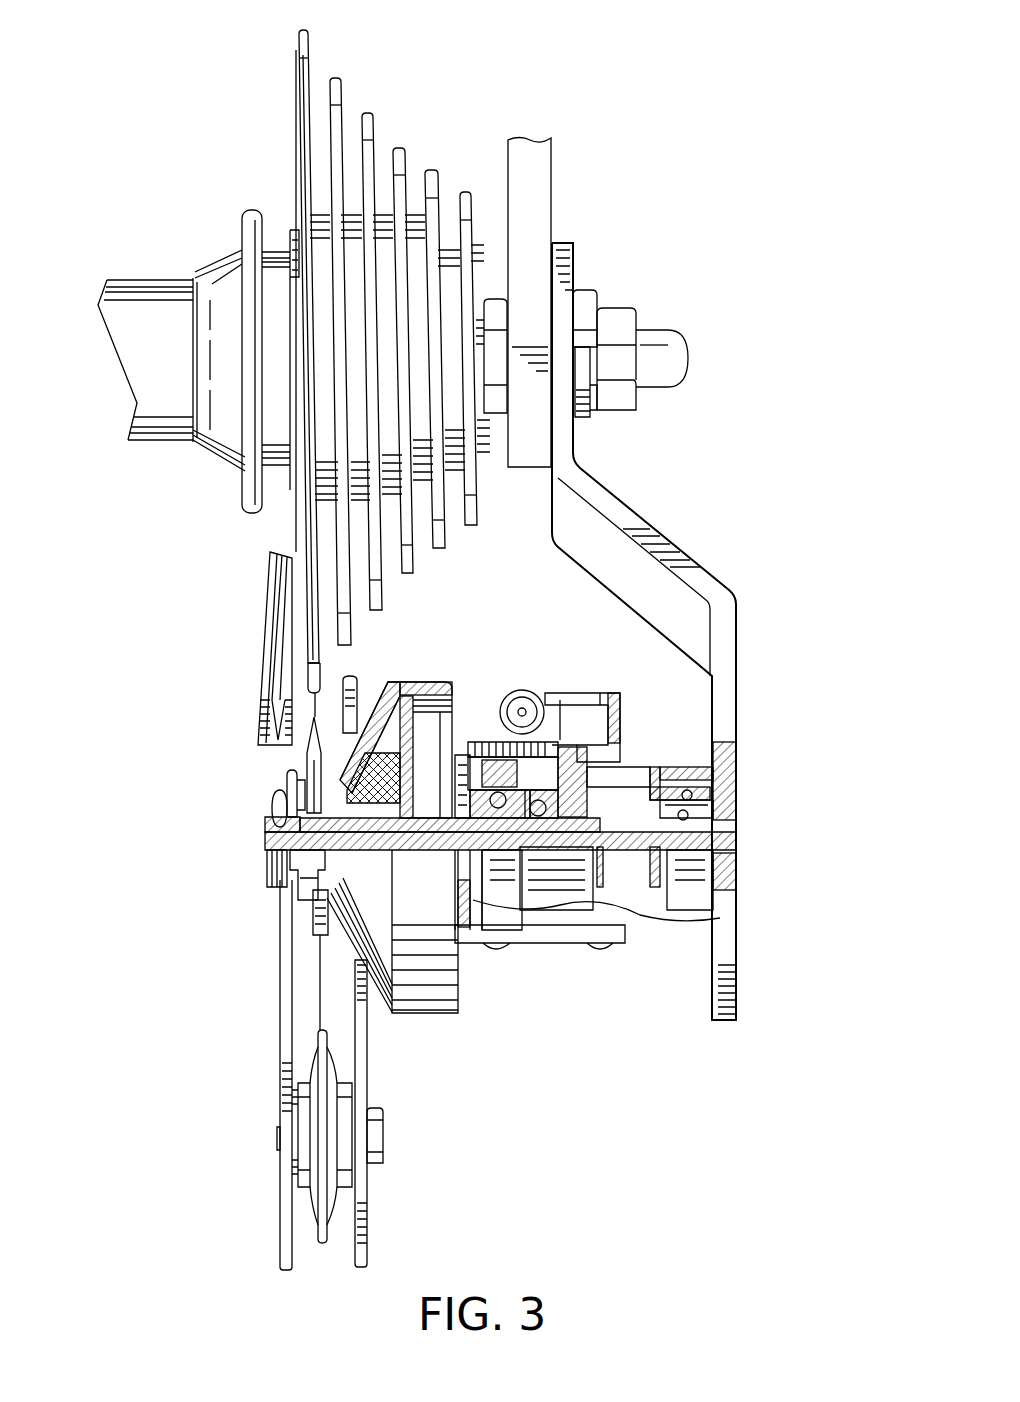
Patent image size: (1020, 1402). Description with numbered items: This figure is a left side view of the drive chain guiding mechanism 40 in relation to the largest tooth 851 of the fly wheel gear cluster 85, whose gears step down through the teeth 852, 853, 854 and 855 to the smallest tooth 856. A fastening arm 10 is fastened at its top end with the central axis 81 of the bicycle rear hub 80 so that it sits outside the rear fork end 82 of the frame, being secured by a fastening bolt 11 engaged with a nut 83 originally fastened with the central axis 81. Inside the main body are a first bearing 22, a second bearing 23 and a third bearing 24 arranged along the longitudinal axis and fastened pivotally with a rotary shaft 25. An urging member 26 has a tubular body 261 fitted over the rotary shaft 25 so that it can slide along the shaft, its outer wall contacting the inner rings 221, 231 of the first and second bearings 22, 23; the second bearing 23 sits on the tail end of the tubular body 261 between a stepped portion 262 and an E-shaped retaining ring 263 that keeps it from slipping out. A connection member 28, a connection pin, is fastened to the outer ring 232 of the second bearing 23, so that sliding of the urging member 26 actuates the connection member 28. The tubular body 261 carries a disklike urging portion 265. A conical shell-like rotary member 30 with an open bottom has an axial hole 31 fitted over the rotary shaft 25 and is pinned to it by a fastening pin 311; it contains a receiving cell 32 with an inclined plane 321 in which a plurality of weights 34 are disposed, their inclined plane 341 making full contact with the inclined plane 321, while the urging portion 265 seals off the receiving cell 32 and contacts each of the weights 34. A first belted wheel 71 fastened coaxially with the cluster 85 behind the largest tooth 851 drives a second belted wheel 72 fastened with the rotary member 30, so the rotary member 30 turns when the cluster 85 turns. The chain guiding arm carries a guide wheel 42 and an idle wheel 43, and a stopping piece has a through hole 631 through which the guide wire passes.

The fastening arm 10 is at (728, 625).
The fastening bolt 11 is at (590, 290).
The first bearing 22 is at (485, 747).
The inner ring of the first bearing 221 is at (450, 773).
The second bearing 23 is at (510, 742).
The inner ring of the second bearing 231 is at (548, 780).
The outer ring of the second bearing 232 is at (568, 747).
The third bearing 24 is at (740, 782).
The rotary shaft 25 is at (273, 840).
The urging member 26 is at (425, 700).
The tubular body 261 is at (463, 858).
The stepped portion 262 is at (480, 850).
The E-shaped retaining ring 263 is at (607, 835).
The disklike urging portion 265 is at (381, 728).
The connection member 28 is at (571, 742).
The rotary member 30 is at (447, 1018).
The axial hole 31 is at (265, 826).
The fastening pin 311 is at (288, 792).
The receiving cell 32 is at (345, 722).
The inclined plane 321 is at (347, 738).
The weights 34 is at (305, 880).
The inclined plane 341 is at (287, 863).
The drive chain guiding mechanism 40 is at (320, 993).
The guide wheel 42 is at (317, 907).
The idle wheel 43 is at (308, 1200).
The through hole 631 is at (525, 712).
The first belted wheel 71 is at (258, 582).
The second belted wheel 72 is at (268, 812).
The bicycle rear hub 80 is at (187, 292).
The central axis 81 is at (668, 340).
The rear fork end 82 is at (540, 228).
The nut 83 is at (622, 318).
The fly wheel gear cluster 85 is at (446, 58).
The largest tooth 851 is at (306, 47).
The tooth 852 is at (338, 92).
The tooth 853 is at (371, 128).
The tooth 854 is at (404, 158).
The tooth 855 is at (437, 173).
The smallest tooth 856 is at (472, 197).